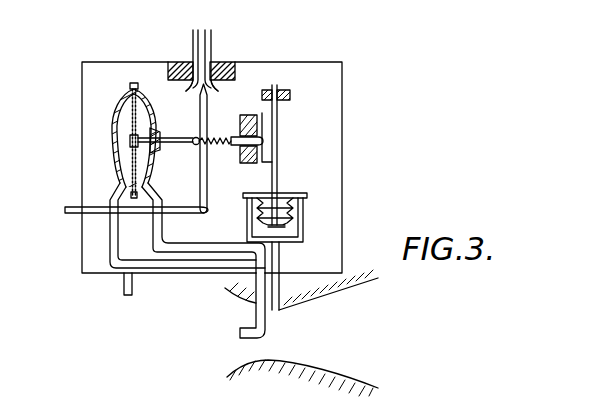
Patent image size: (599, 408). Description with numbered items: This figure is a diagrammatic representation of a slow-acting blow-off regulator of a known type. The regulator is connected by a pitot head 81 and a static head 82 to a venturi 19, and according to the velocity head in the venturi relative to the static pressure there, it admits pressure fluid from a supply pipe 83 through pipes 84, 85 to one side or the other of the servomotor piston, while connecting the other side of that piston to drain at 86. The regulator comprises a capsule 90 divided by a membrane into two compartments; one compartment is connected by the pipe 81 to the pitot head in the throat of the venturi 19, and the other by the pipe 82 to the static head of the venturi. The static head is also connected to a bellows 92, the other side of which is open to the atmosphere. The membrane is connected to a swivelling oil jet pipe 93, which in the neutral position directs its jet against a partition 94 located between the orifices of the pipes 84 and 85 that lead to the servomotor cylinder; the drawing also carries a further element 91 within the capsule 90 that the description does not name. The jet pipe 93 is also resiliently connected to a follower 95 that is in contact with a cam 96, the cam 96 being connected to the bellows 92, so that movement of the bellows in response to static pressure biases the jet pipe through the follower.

The venturi 19 is at (300, 345).
The pitot head 81 is at (248, 326).
The static head 82 is at (279, 283).
The supply pipe 83 is at (80, 209).
The pipe 84 is at (191, 40).
The pipe 85 is at (209, 47).
The drain 86 is at (122, 286).
The capsule 90 is at (117, 108).
The bulb stem chain 91 is at (136, 170).
The bellows 92 is at (304, 214).
The swivelling oil jet pipe 93 is at (207, 116).
The partition 94 is at (187, 90).
The follower 95 is at (236, 146).
The cam 96 is at (267, 150).